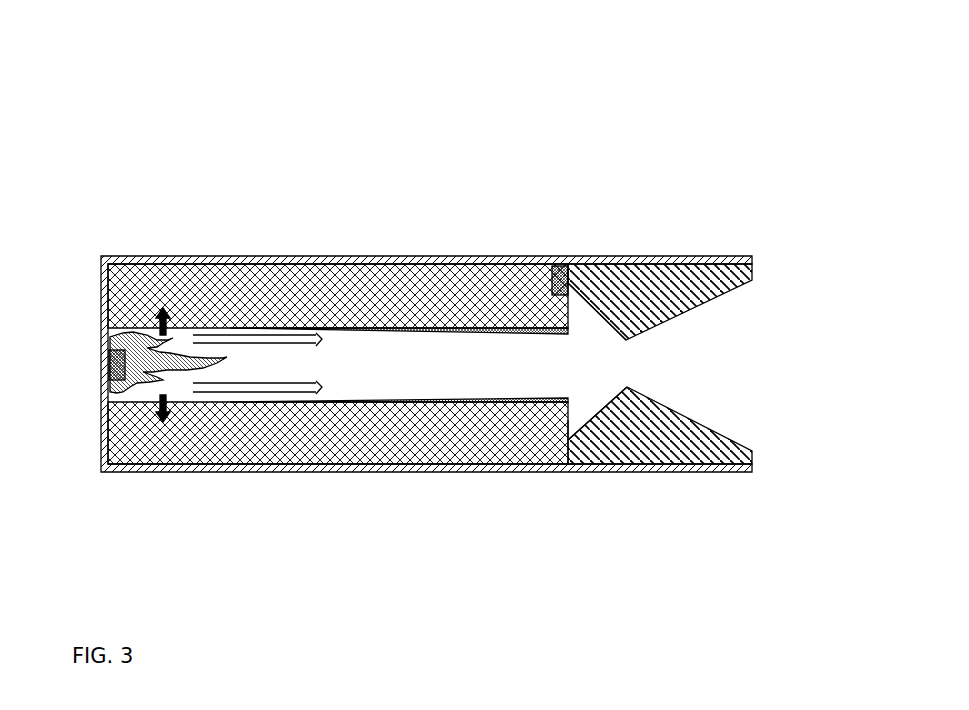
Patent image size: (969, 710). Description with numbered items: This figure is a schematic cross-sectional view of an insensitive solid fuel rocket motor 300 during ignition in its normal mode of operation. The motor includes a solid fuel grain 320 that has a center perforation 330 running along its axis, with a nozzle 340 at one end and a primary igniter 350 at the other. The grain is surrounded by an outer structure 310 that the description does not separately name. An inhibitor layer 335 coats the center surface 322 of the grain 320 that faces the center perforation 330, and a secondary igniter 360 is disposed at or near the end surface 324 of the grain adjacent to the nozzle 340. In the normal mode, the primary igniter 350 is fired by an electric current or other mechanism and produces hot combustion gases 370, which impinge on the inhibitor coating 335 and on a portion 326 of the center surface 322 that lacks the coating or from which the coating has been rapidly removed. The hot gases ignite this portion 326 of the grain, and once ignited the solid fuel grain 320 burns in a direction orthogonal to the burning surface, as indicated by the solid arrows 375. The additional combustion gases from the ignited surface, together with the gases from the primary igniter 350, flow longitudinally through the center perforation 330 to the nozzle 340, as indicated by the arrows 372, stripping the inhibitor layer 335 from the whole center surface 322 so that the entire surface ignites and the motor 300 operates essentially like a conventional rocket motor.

The insensitive rocket motor 300 is at (182, 93).
The housing 310 is at (685, 473).
The grain 320 is at (340, 283).
The center surface 322 is at (360, 403).
The end surface 324 is at (567, 430).
The portion of the surface 326 is at (133, 323).
The center perforation 330 is at (485, 368).
The inhibitor layer 335 is at (513, 334).
The nozzle 340 is at (713, 299).
The primary igniter 350 is at (117, 366).
The secondary igniter 360 is at (566, 270).
The hot combustion gases 370 is at (163, 370).
The arrows 372 is at (245, 391).
The solid arrows 375 is at (164, 310).